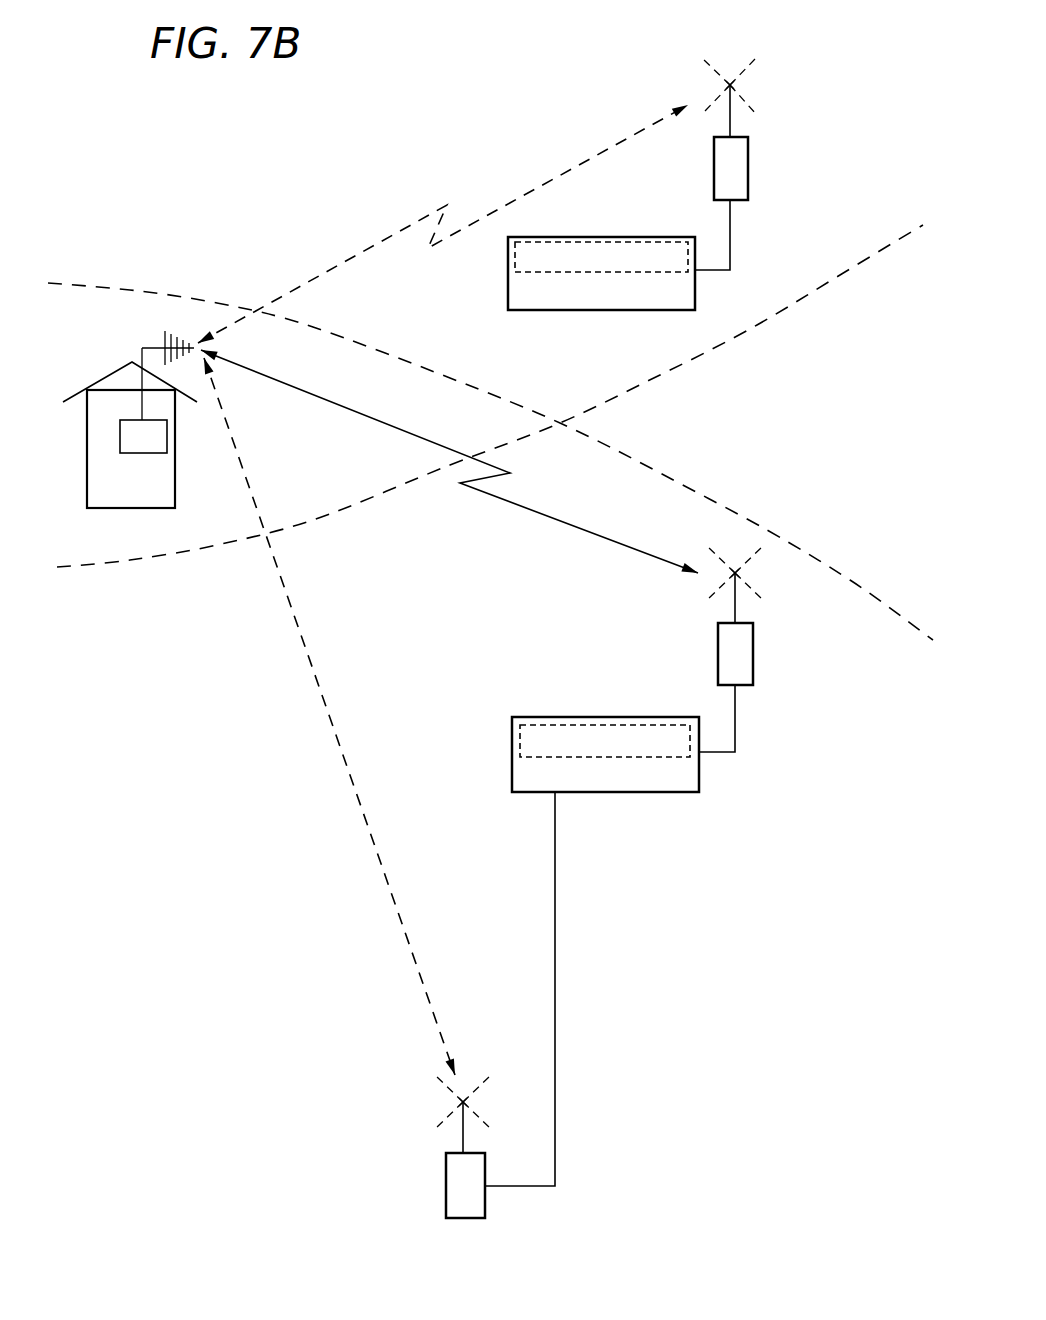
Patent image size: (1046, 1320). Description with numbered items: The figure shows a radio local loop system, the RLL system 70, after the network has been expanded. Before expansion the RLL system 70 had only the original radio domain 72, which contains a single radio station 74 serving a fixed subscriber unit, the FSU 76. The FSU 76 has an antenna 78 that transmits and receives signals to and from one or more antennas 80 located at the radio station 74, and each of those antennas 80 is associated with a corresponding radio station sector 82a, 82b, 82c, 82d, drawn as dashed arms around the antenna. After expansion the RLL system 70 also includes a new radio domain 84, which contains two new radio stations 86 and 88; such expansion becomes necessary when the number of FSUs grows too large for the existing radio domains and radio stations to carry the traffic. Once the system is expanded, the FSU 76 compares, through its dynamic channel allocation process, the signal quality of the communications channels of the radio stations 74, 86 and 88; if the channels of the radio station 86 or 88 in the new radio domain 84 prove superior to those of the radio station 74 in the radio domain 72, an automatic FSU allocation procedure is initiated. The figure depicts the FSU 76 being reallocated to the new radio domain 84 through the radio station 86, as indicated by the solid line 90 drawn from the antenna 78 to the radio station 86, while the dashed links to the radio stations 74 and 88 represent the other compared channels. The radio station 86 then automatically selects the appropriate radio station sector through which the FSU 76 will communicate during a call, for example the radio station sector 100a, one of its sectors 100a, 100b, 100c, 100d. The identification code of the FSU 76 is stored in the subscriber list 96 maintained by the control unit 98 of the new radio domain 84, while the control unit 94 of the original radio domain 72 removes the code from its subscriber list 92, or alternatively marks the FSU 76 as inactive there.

The RLL system 70 is at (220, 953).
The radio domain 72 is at (459, 120).
The radio station 74 is at (749, 168).
The FSU 76 is at (167, 437).
The antenna 78 is at (150, 348).
The antennas 80 is at (729, 124).
The radio station sector 82a is at (706, 81).
The radio station sector 82b is at (731, 66).
The radio station sector 82c is at (752, 87).
The radio station sector 82d is at (743, 113).
The new radio domain 84 is at (703, 974).
The radio station 86 is at (753, 660).
The radio station 88 is at (446, 1185).
The solid line 90 is at (545, 515).
The subscriber list 92 is at (608, 242).
The control unit 94 is at (696, 292).
The subscriber list 96 is at (608, 717).
The control unit 98 is at (699, 776).
The radio station sector 100a is at (710, 580).
The radio station sector 100b is at (727, 551).
The radio station sector 100c is at (761, 572).
The radio station sector 100d is at (745, 602).